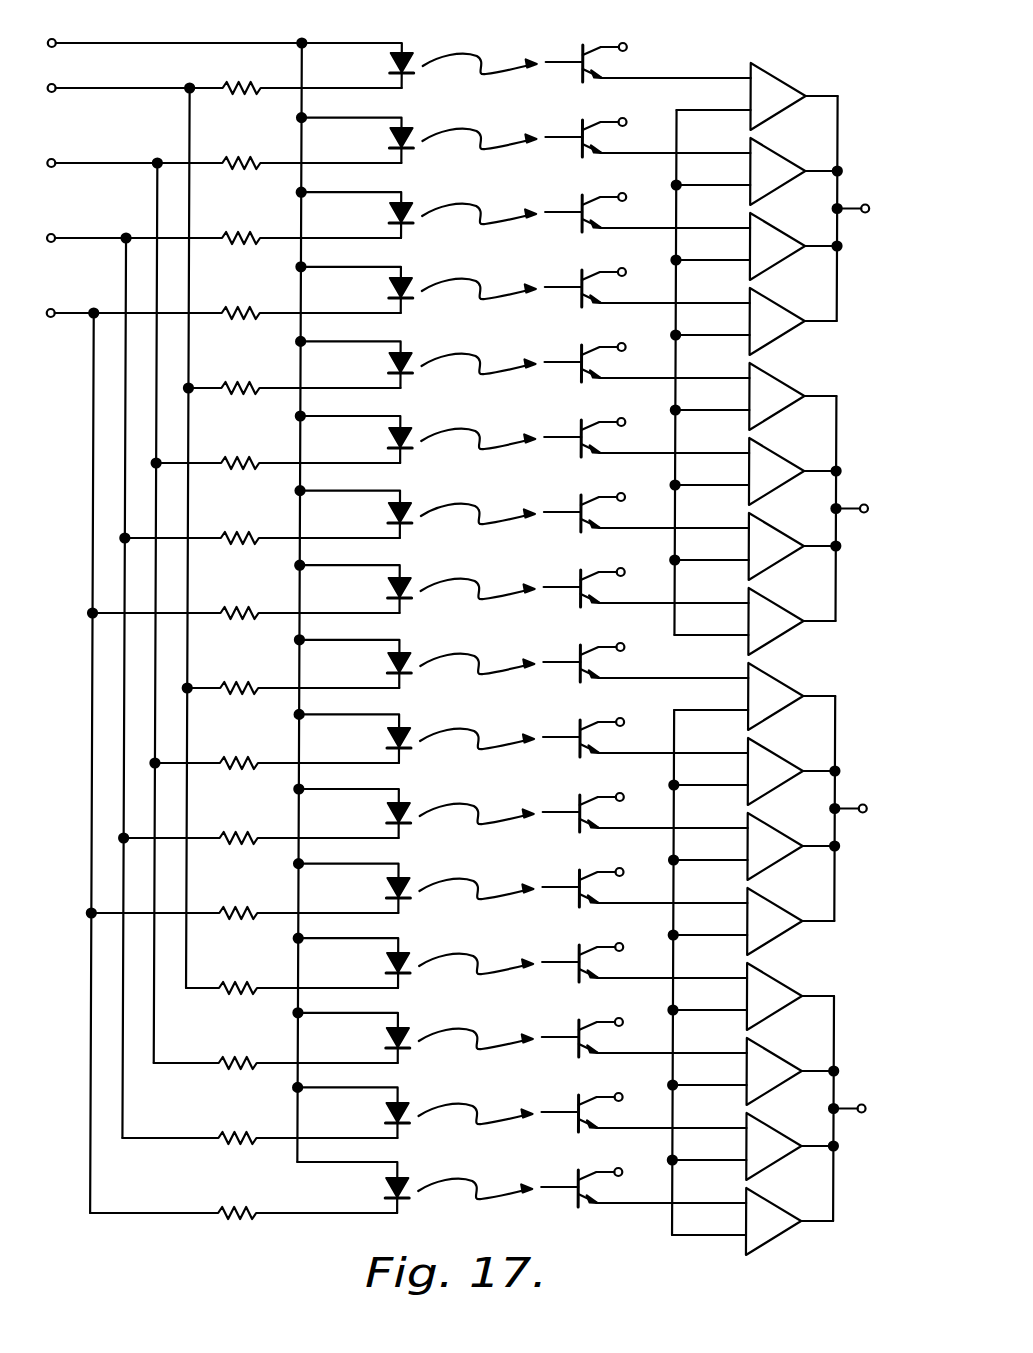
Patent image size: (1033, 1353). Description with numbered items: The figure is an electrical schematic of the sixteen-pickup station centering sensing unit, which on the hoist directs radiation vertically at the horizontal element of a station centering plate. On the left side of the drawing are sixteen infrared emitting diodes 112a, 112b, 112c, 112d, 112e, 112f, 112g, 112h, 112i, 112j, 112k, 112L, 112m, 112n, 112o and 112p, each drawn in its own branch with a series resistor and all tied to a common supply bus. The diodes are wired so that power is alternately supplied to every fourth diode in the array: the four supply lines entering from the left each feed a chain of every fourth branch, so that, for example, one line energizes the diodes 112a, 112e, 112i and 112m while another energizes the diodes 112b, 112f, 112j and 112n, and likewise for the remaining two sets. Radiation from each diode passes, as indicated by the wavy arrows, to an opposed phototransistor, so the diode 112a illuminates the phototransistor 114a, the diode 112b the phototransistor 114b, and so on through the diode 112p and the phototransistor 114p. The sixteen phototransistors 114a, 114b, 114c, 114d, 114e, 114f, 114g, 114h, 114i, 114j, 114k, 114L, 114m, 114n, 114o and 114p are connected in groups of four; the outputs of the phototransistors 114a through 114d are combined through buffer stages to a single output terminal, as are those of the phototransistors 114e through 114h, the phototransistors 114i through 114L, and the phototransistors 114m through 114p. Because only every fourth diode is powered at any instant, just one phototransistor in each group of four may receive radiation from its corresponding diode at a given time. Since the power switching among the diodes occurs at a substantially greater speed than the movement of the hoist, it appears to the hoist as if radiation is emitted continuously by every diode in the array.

The infrared emitting diode 112a is at (390, 61).
The infrared emitting diode 112b is at (370, 139).
The infrared emitting diode 112c is at (370, 214).
The infrared emitting diode 112d is at (370, 289).
The infrared emitting diode 112e is at (369, 364).
The infrared emitting diode 112f is at (369, 439).
The infrared emitting diode 112g is at (369, 514).
The infrared emitting diode 112h is at (369, 589).
The infrared emitting diode 112i is at (368, 664).
The infrared emitting diode 112j is at (368, 739).
The infrared emitting diode 112k is at (368, 814).
The infrared emitting diode 112L is at (367, 889).
The infrared emitting diode 112m is at (367, 964).
The infrared emitting diode 112n is at (367, 1039).
The infrared emitting diode 112o is at (366, 1114).
The infrared emitting diode 112p is at (366, 1189).
The phototransistor 114a is at (582, 45).
The phototransistor 114b is at (647, 122).
The phototransistor 114c is at (647, 197).
The phototransistor 114d is at (647, 272).
The phototransistor 114e is at (646, 347).
The phototransistor 114f is at (646, 422).
The phototransistor 114g is at (646, 497).
The phototransistor 114h is at (646, 572).
The phototransistor 114i is at (645, 647).
The phototransistor 114j is at (645, 722).
The phototransistor 114k is at (645, 797).
The phototransistor 114L is at (644, 872).
The phototransistor 114m is at (644, 947).
The phototransistor 114n is at (644, 1022).
The phototransistor 114o is at (643, 1097).
The phototransistor 114p is at (643, 1172).